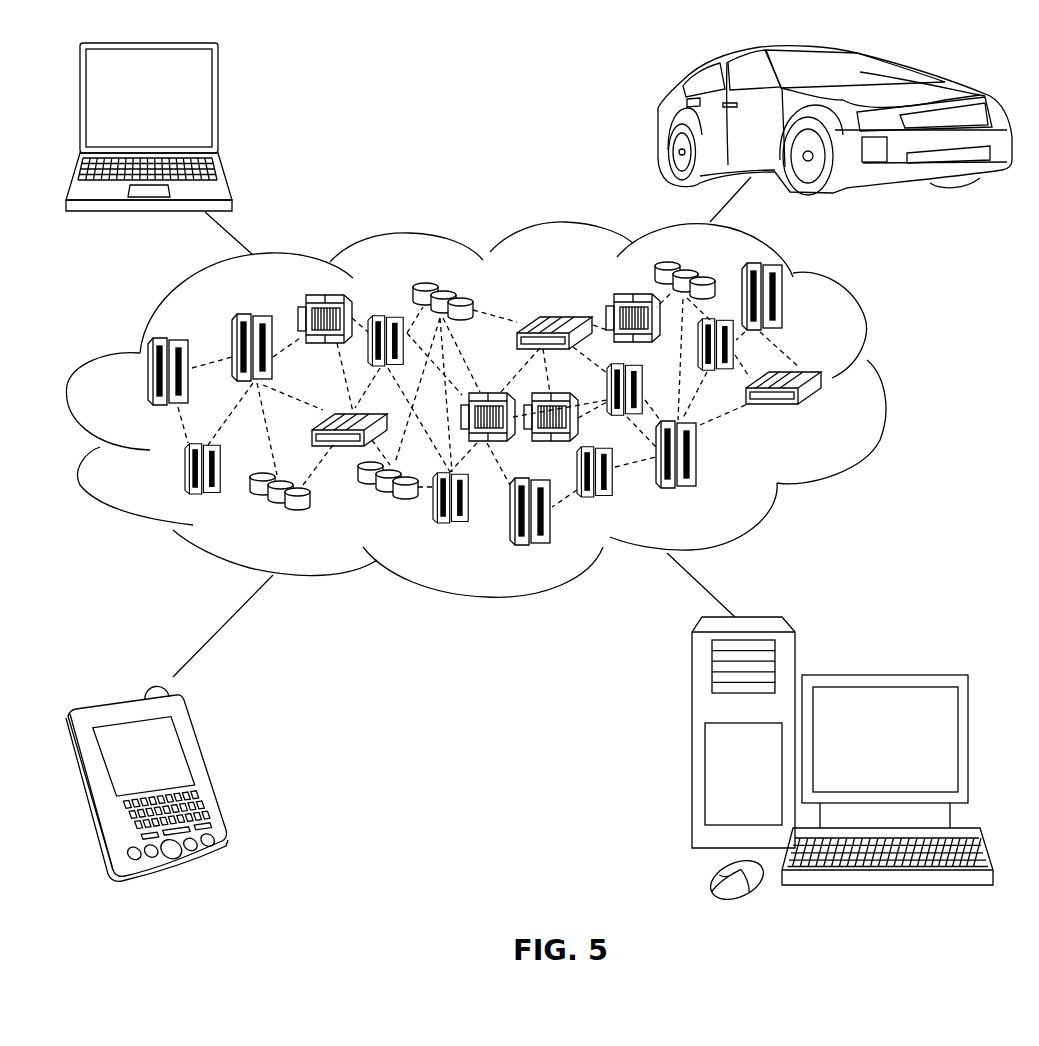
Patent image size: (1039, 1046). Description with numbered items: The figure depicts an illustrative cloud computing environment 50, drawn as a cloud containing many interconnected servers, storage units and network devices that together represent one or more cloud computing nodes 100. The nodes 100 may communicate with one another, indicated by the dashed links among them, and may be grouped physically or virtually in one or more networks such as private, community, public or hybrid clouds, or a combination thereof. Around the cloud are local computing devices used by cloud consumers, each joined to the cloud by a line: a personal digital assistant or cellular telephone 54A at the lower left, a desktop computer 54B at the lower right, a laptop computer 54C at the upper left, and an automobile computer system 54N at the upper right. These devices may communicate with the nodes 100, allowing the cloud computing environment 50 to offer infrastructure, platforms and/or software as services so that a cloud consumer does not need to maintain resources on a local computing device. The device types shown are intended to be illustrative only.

The cloud computing environment 50 is at (883, 382).
The cloud computing nodes 100 is at (825, 413).
The personal digital assistant or cellular telephone 54A is at (207, 769).
The desktop computer 54B is at (882, 675).
The laptop computer 54C is at (219, 106).
The automobile computer system 54N is at (660, 121).